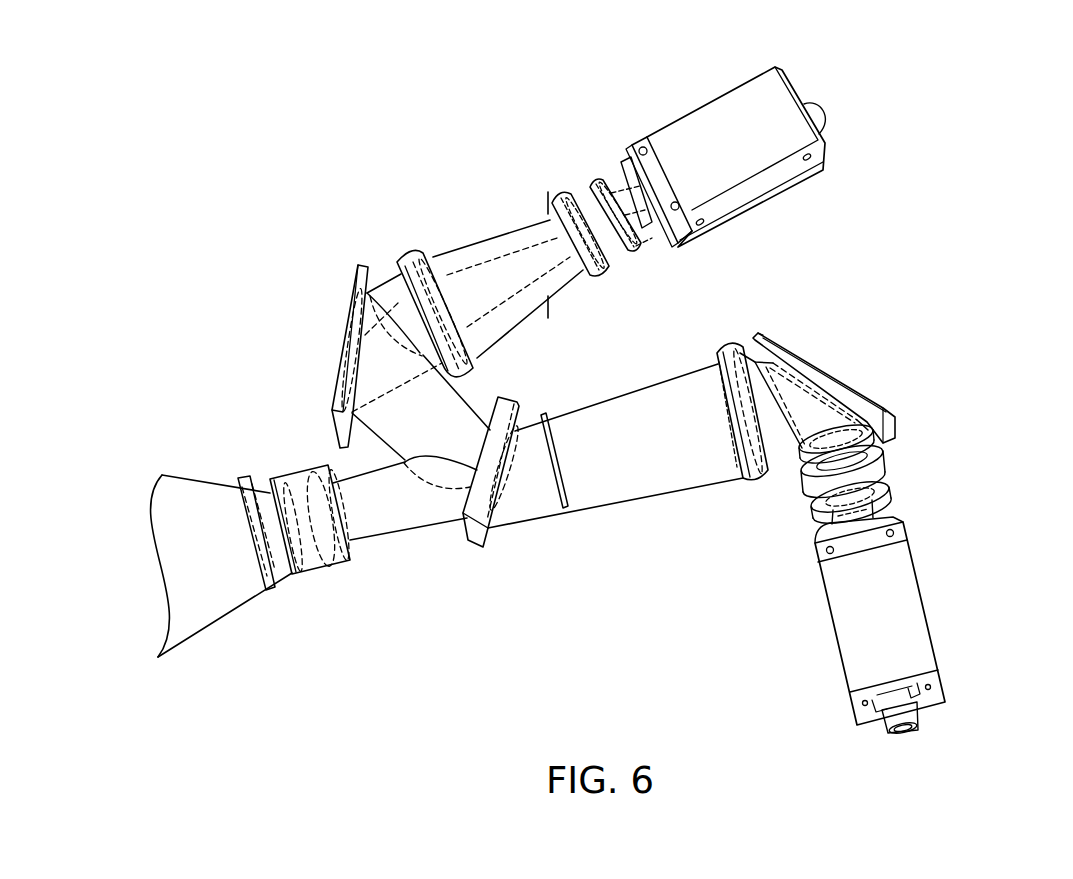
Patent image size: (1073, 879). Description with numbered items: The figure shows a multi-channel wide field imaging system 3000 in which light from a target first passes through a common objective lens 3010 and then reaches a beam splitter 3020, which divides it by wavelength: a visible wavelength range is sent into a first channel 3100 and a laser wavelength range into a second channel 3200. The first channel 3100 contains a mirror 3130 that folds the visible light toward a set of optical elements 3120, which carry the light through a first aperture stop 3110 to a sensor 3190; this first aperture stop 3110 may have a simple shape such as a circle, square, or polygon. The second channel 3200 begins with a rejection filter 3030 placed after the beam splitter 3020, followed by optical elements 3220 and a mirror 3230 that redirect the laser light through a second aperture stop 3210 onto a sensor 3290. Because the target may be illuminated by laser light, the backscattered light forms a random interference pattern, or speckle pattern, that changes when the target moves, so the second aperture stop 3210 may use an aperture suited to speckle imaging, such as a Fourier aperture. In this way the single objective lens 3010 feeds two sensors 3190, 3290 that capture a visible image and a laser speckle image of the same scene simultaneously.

The wide field imaging system 3000 is at (952, 82).
The common objective lens 3010 is at (313, 572).
The beam splitter 3020 is at (478, 549).
The rejection filter 3030 is at (565, 513).
The first channel 3100 is at (420, 165).
The first aperture stop 3110 is at (548, 205).
The optical elements 3120 is at (472, 371).
The mirror 3130 is at (355, 291).
The sensor 3190 is at (713, 117).
The second channel 3200 is at (945, 345).
The second aperture stop 3210 is at (802, 450).
The optical elements 3220 is at (727, 347).
The mirror 3230 is at (814, 366).
The sensor 3290 is at (838, 630).